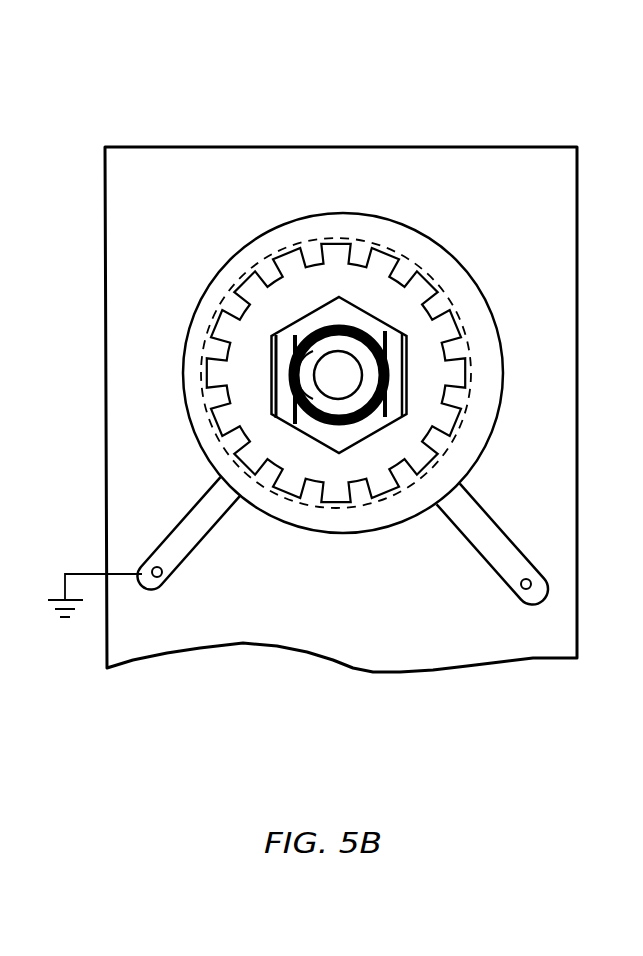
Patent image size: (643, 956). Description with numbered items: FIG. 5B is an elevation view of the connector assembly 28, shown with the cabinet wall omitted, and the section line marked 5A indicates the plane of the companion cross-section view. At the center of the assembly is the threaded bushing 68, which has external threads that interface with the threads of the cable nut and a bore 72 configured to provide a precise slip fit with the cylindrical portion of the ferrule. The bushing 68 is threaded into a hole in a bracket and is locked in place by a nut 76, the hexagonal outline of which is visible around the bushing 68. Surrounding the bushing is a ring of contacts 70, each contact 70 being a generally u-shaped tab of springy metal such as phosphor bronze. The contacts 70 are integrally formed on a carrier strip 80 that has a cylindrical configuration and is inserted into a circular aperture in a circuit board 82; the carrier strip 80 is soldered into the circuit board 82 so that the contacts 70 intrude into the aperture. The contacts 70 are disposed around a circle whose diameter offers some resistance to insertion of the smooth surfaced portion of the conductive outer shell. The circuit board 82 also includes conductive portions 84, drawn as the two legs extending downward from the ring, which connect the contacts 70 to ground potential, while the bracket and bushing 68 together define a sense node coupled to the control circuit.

The connector assembly 28 is at (538, 119).
The circuit board 82 is at (125, 247).
The contacts 70 is at (430, 282).
The carrier strip 80 is at (237, 272).
The nut 76 is at (335, 316).
The threaded bushing 68 is at (293, 338).
The bore 72 is at (337, 388).
The conductive portions 84 is at (195, 522).
The section line 5A- 5A is at (336, 282).